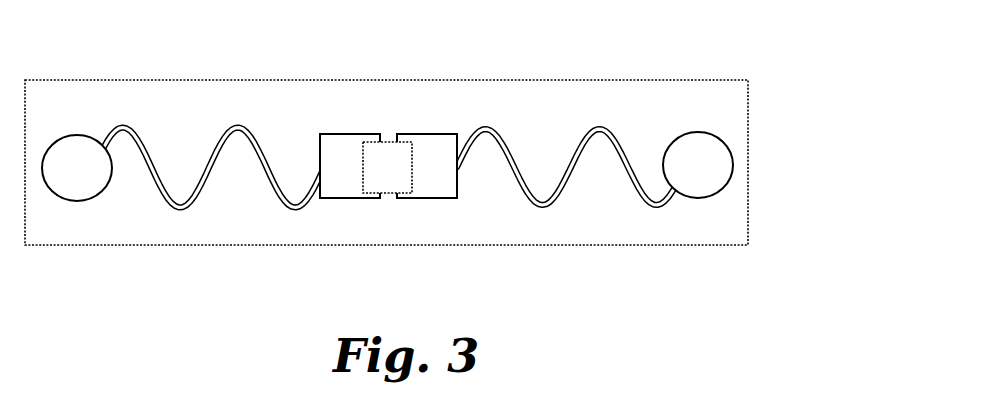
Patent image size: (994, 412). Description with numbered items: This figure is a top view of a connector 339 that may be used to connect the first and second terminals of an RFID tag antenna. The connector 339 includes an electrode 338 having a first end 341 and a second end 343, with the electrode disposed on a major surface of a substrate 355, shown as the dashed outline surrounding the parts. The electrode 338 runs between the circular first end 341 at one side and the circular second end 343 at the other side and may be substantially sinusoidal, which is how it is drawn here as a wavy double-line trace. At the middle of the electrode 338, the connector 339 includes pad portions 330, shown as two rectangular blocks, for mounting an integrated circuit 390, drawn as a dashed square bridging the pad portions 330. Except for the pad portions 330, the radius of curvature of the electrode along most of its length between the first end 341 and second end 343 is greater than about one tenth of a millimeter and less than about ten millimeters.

The pad portions 330 is at (423, 143).
The electrode 338 is at (598, 128).
The connector 339 is at (714, 35).
The first end 341 is at (77, 190).
The second end 343 is at (722, 158).
The substrate 355 is at (748, 223).
The integrated circuit 390 is at (388, 183).